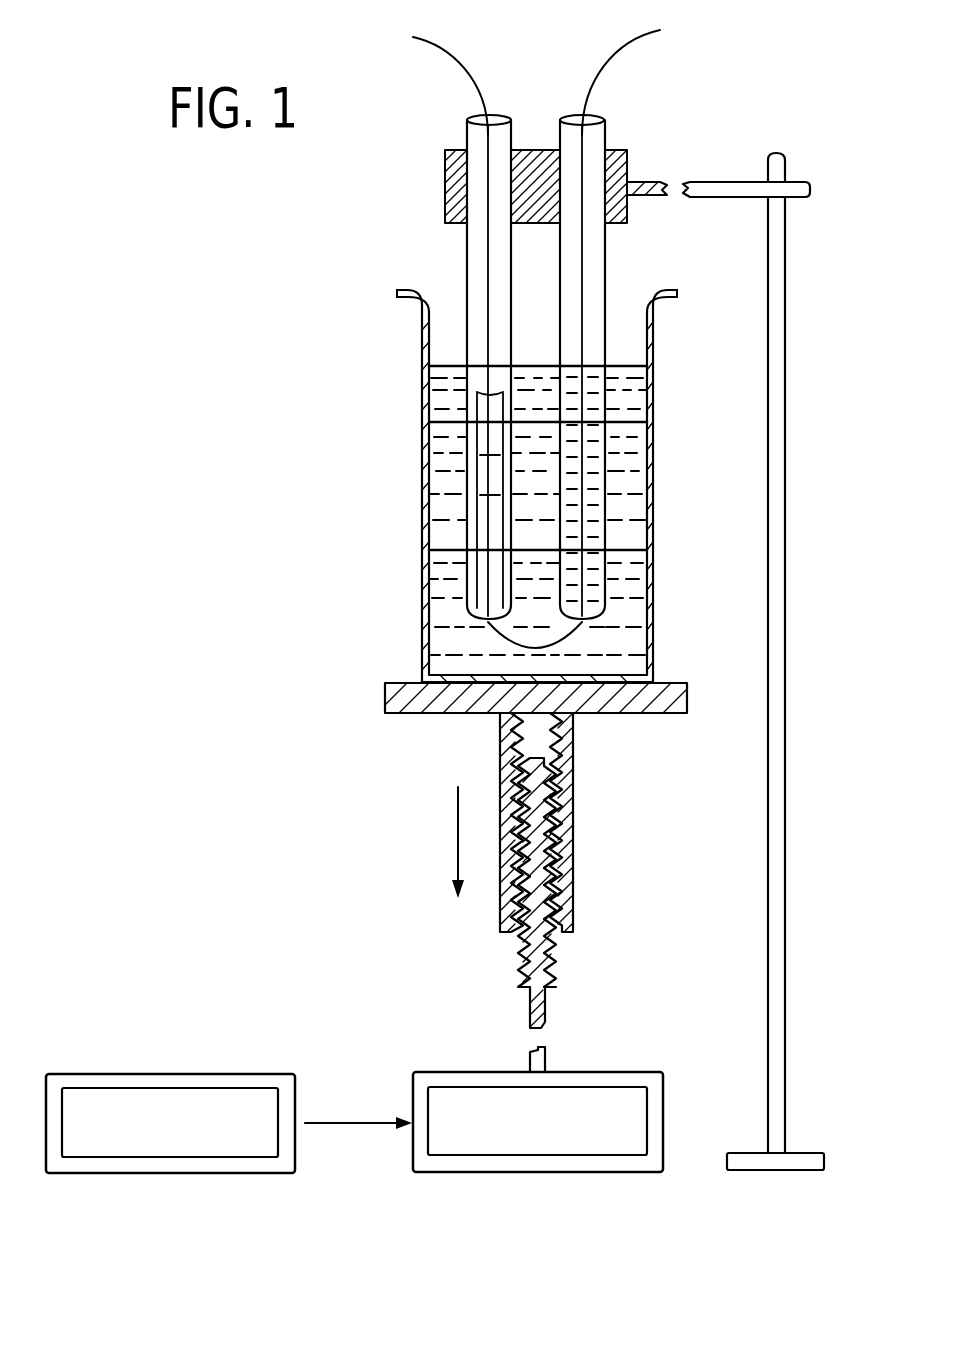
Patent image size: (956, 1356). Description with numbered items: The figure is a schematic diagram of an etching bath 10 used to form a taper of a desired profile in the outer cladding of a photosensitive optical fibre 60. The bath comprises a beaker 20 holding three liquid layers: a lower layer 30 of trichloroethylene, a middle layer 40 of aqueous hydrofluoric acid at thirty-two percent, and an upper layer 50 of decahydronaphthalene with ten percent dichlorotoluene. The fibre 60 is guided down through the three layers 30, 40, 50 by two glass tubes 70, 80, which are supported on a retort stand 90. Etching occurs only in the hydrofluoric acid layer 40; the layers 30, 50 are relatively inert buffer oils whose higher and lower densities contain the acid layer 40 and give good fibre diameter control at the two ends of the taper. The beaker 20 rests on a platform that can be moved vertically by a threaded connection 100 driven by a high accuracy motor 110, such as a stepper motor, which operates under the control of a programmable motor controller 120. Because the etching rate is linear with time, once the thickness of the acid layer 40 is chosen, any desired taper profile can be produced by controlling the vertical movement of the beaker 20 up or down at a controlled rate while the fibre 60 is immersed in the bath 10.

The etching bath 10 is at (255, 342).
The beaker 20 is at (404, 298).
The layer of trichloroethylene 30 is at (445, 594).
The layer of aqueous hydrofluoric acid 40 is at (445, 488).
The layer of decahydronaphthalene with dichlorotoluene 50 is at (445, 402).
The photosensitive optical fibre 60 is at (592, 79).
The glass tube 70 is at (467, 244).
The glass tube 80 is at (605, 250).
The retort stand 90 is at (766, 378).
The threaded connection 100 is at (573, 835).
The high accuracy motor 110 is at (600, 1072).
The programmable motor controller 120 is at (163, 1074).